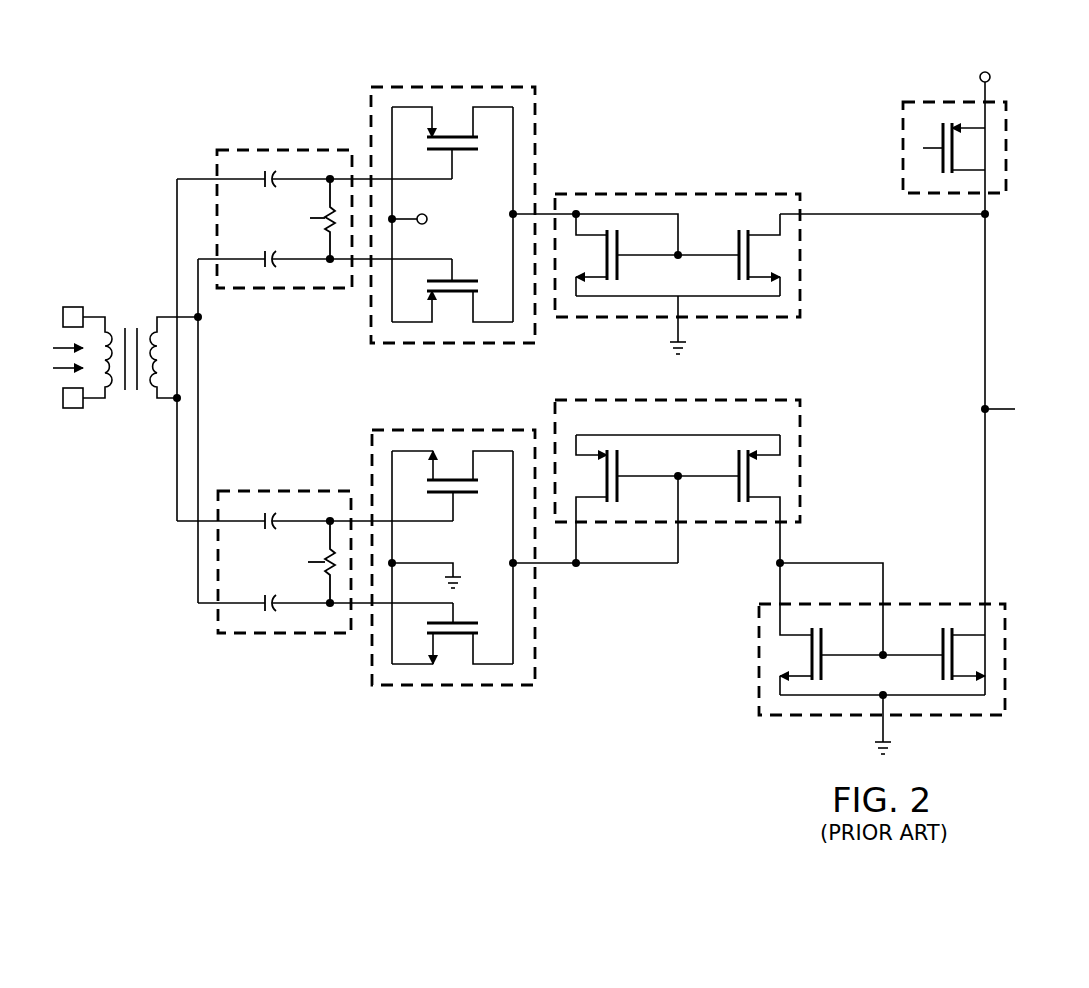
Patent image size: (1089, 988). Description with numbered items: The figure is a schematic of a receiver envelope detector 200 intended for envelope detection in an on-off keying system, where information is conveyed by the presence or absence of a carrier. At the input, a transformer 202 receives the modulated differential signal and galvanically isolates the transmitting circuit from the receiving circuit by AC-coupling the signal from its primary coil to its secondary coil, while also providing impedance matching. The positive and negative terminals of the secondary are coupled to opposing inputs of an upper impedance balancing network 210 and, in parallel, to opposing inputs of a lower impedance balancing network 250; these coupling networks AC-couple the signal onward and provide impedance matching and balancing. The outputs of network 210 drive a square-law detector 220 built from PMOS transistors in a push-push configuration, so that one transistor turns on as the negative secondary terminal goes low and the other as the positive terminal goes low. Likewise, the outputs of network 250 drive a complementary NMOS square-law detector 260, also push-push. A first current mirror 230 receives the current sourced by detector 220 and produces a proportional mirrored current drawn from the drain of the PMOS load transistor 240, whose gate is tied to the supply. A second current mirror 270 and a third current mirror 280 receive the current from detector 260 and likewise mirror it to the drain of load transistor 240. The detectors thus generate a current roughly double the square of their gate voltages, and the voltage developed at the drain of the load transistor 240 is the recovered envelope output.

The receiver envelope detector 200 is at (257, 70).
The transformer 202 is at (100, 246).
The impedance balancing network 210 is at (247, 148).
The square-law detector 220 is at (430, 86).
The first current mirror 230 is at (752, 192).
The load transistor 240 is at (1009, 97).
The impedance balancing network 250 is at (245, 637).
The square-law detector 260 is at (430, 688).
The second current mirror 270 is at (806, 498).
The third current mirror 280 is at (1009, 689).